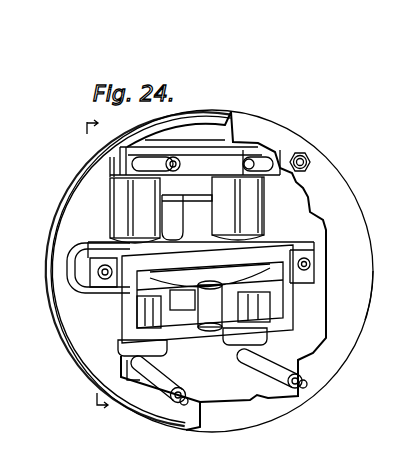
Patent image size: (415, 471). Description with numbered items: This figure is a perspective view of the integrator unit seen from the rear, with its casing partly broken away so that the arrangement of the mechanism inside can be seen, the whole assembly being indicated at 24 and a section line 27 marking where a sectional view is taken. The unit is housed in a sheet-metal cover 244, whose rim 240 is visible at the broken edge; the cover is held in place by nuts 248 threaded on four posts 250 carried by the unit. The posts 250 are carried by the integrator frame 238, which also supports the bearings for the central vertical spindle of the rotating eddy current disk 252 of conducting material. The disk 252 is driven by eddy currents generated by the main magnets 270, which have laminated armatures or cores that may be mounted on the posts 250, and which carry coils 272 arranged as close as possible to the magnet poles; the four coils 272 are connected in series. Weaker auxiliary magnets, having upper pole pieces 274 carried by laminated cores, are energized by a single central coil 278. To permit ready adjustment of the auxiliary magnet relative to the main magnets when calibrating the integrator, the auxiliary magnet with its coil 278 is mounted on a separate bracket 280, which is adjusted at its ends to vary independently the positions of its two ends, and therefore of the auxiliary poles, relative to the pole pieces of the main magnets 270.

The housing assembly 24 is at (272, 114).
The section line 27 is at (106, 266).
The integrator frame 238 is at (302, 240).
The housing rim 240 is at (60, 232).
The sheet-metal cover 244 is at (364, 290).
The nut 248 is at (308, 155).
The post 250 is at (243, 164).
The eddy current disk 252 is at (186, 252).
The main magnet 270 is at (270, 160).
The coil 272 is at (118, 213).
The upper pole piece 274 is at (195, 262).
The central coil 278 is at (205, 311).
The bracket 280 is at (70, 257).